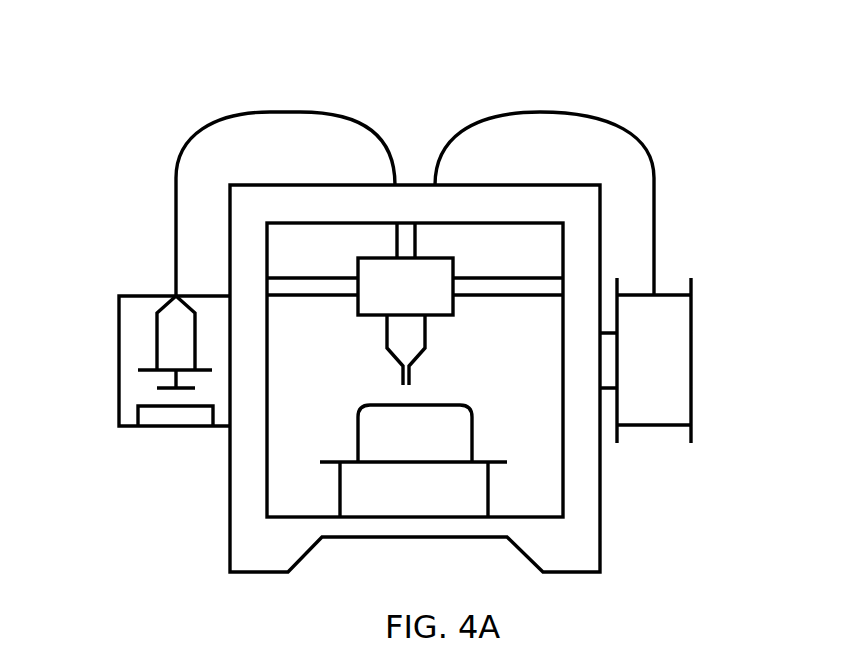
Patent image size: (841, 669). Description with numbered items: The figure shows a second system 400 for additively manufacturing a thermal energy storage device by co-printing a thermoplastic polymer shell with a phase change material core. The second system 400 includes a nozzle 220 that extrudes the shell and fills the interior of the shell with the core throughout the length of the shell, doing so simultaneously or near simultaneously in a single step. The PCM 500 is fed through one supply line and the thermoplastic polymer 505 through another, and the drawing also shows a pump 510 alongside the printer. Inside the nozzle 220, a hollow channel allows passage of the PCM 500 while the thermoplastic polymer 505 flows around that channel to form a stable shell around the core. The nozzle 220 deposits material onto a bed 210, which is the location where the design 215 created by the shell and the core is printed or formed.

The second system 400 is at (178, 72).
The PCM 500 is at (174, 237).
The thermoplastic polymer 505 is at (655, 163).
The pump 510 is at (119, 352).
The bed 210 is at (348, 453).
The design 215 is at (440, 451).
The nozzle 220 is at (412, 375).